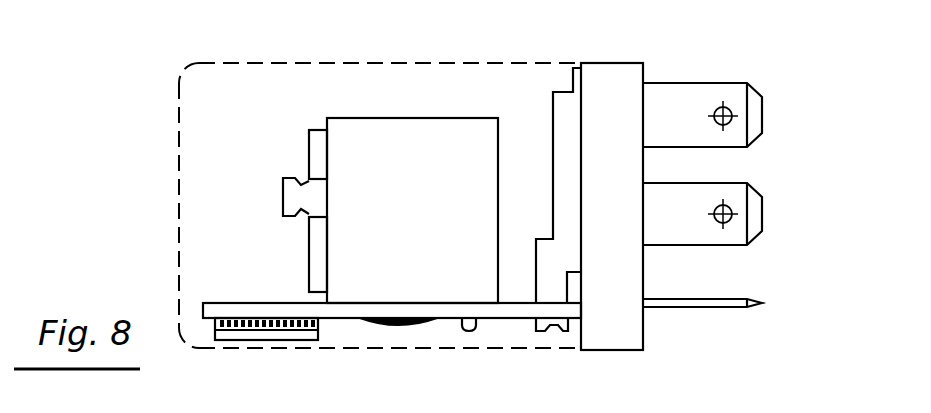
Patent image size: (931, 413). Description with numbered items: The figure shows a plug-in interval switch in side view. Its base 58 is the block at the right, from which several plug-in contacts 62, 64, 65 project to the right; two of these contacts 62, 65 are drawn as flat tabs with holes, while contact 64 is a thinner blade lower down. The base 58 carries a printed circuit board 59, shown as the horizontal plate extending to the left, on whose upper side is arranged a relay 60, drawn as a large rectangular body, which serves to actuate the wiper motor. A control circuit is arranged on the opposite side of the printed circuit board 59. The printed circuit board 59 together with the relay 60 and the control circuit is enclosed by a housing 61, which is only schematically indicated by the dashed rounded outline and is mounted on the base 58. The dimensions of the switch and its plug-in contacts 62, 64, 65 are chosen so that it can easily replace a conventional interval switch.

The base 58 is at (600, 64).
The printed circuit board 59 is at (350, 310).
The relay 60 is at (437, 217).
The housing 61 is at (252, 63).
The plug-in contact 62 is at (754, 99).
The plug-in contact 64 is at (760, 300).
The plug-in contact 65 is at (754, 199).